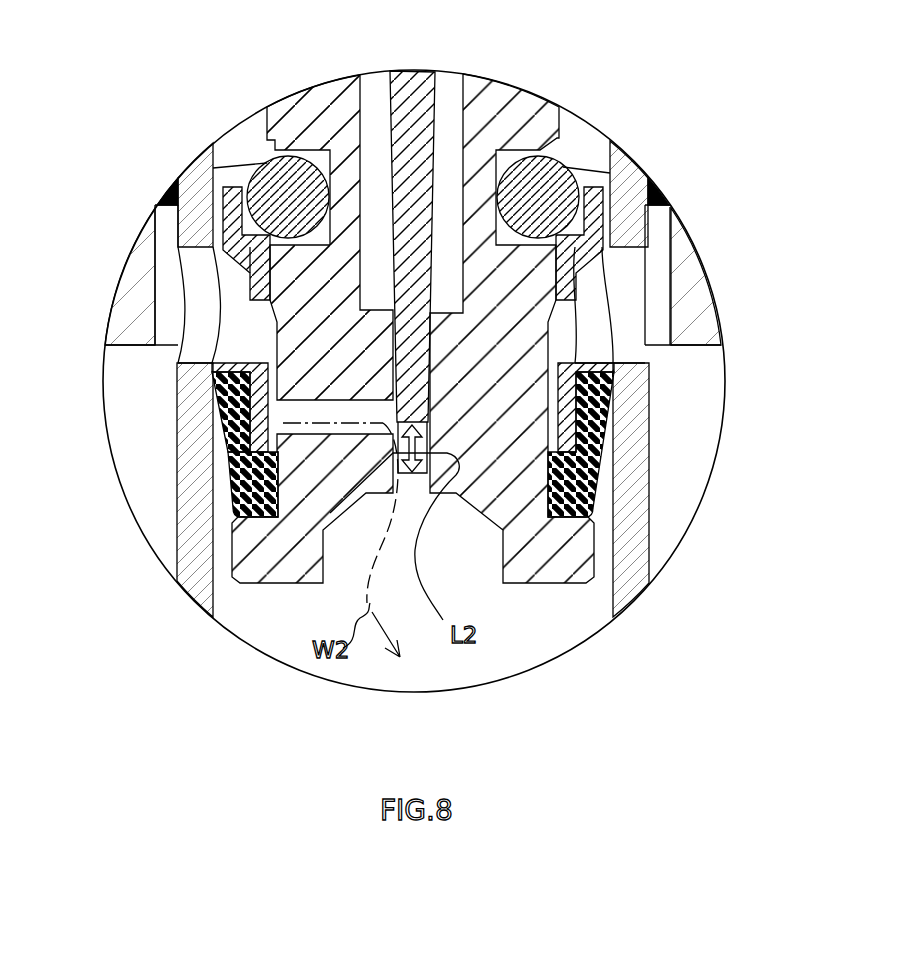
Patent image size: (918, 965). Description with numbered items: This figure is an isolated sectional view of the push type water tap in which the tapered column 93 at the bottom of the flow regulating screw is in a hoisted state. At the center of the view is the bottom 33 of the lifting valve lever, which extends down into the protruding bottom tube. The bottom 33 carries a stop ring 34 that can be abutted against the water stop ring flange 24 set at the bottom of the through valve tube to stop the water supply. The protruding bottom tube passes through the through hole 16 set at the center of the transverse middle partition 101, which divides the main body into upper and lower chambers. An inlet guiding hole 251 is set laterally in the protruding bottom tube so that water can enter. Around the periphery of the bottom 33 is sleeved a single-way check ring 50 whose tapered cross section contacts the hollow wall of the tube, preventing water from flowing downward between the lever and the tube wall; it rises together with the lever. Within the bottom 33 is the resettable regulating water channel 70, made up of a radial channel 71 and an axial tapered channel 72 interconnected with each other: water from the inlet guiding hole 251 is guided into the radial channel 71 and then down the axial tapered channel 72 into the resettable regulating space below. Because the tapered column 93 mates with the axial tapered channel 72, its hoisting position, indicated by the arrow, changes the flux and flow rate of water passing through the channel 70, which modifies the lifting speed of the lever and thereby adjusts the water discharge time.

The bottom 33 is at (307, 103).
The tapered column 93 is at (410, 90).
The water stop ring flange 24 is at (527, 160).
The stop ring 34 is at (583, 173).
The transverse middle partition 101 is at (697, 300).
The inlet guiding hole 251 is at (190, 347).
The resettable regulating water channel 70 is at (221, 470).
The axial tapered channel 72 is at (405, 360).
The radial channel 71 is at (345, 430).
The single-way check ring 50 is at (592, 480).
The through hole 16 is at (612, 597).